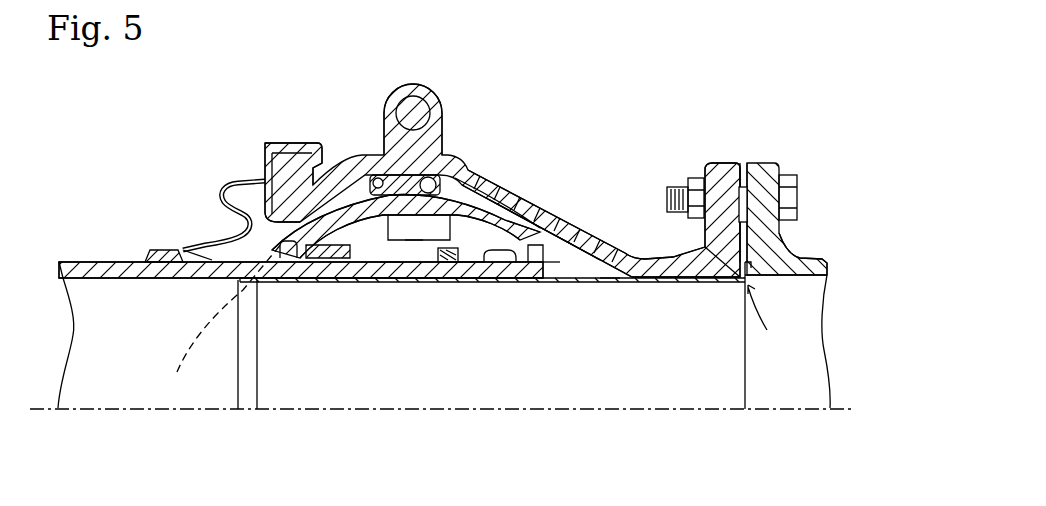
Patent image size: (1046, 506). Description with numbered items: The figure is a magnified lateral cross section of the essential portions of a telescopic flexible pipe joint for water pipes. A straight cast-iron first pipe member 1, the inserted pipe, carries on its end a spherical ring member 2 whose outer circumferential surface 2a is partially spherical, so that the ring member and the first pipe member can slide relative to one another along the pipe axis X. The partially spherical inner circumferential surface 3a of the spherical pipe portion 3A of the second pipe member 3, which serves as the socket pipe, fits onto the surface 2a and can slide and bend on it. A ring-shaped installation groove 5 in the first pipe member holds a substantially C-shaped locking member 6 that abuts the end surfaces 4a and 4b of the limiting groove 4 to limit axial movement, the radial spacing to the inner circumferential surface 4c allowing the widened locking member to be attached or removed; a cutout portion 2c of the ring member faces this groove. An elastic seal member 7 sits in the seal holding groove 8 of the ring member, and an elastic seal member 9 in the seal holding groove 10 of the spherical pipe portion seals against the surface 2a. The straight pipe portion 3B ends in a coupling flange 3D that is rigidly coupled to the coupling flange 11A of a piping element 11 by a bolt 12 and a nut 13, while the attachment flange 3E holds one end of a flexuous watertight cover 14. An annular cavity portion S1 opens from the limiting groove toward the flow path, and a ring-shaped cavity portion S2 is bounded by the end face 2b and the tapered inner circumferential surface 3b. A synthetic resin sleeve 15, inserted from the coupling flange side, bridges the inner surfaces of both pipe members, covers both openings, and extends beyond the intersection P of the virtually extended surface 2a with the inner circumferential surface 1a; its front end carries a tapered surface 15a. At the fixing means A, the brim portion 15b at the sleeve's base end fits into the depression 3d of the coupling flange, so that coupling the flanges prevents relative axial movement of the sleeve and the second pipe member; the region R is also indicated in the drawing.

The first pipe member 1 is at (99, 262).
The inner circumferential surface of the first pipe member 1a is at (153, 279).
The spherical ring member 2 is at (540, 240).
The outer circumferential surface of the spherical ring member 2a is at (523, 240).
The end face of the spherical ring member 2b is at (565, 246).
The cutout portion 2c is at (543, 272).
The second pipe member 3 is at (442, 142).
The spherical pipe portion 3A is at (390, 150).
The straight pipe portion 3B is at (682, 260).
The coupling flange 3D is at (727, 165).
The attachment flange 3E is at (300, 152).
The partially spherical inner circumferential surface 3a is at (467, 280).
The tapered inner circumferential surface 3b is at (607, 285).
The depression 3d is at (730, 265).
The limiting groove 4 is at (445, 222).
The end surface of the limiting groove 4a is at (522, 280).
The end surface of the limiting groove 4b is at (387, 280).
The inner circumferential surface of the limiting groove 4c is at (413, 280).
The installation groove 5 is at (432, 280).
The locking member 6 is at (475, 222).
The elastic seal member 7 is at (300, 283).
The seal holding groove 8 is at (333, 280).
The elastic seal member 9 is at (375, 179).
The seal holding groove 10 is at (448, 196).
The piping element 11 is at (808, 258).
The coupling flange of the piping element 11A is at (757, 163).
The bolt 12 is at (790, 178).
The nut 13 is at (693, 180).
The cover 14 is at (243, 182).
The sleeve 15 is at (670, 290).
The tapered surface 15a is at (247, 392).
The brim portion 15b is at (750, 262).
The fixing means A is at (763, 314).
The intersection P is at (230, 247).
The region R is at (224, 316).
The annular cavity portion S1 is at (498, 280).
The ring-shaped cavity portion S2 is at (573, 280).
The pipe axis X is at (680, 411).